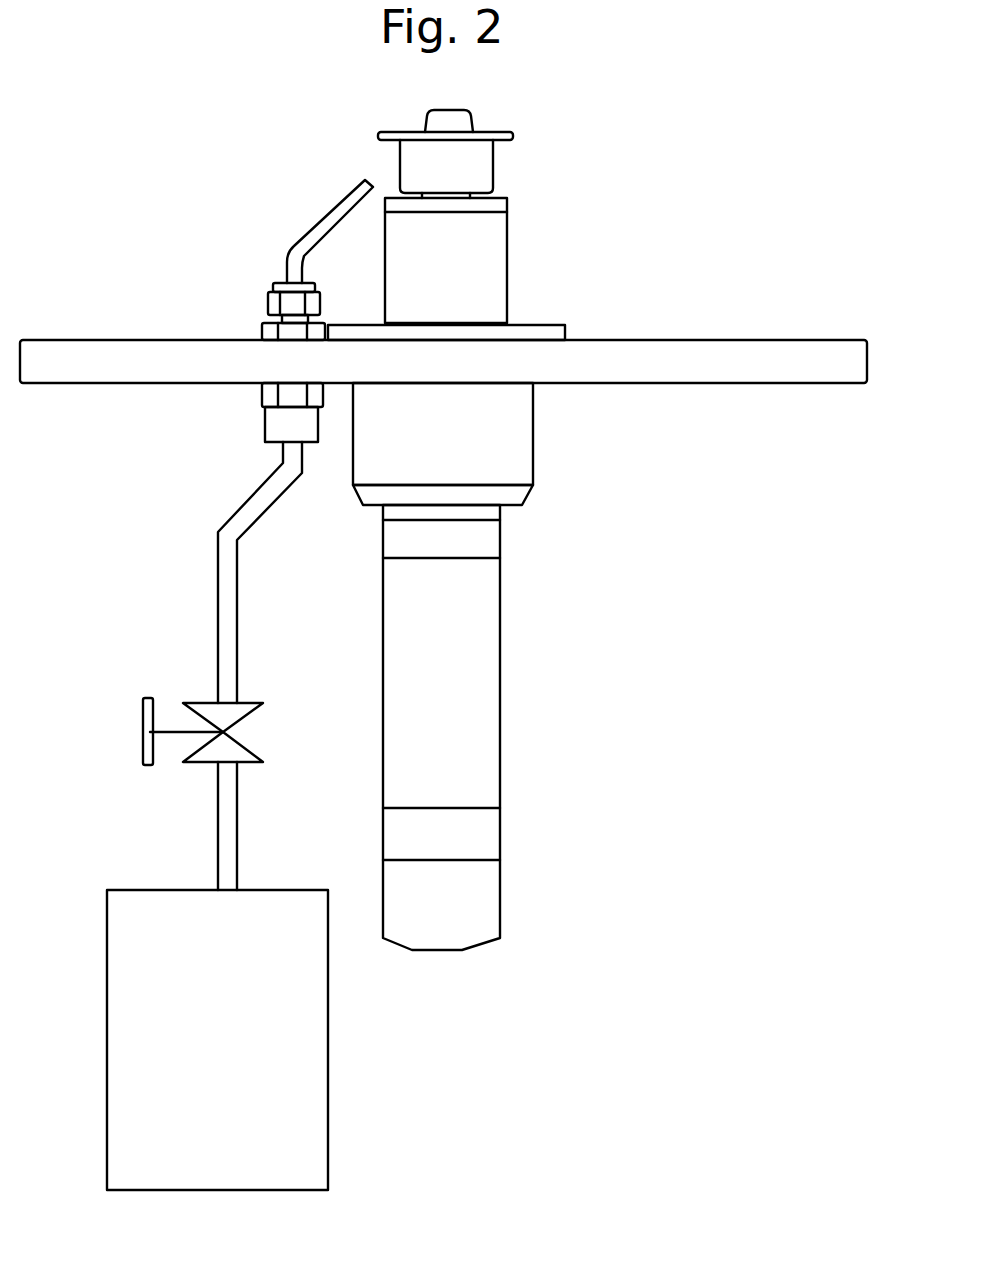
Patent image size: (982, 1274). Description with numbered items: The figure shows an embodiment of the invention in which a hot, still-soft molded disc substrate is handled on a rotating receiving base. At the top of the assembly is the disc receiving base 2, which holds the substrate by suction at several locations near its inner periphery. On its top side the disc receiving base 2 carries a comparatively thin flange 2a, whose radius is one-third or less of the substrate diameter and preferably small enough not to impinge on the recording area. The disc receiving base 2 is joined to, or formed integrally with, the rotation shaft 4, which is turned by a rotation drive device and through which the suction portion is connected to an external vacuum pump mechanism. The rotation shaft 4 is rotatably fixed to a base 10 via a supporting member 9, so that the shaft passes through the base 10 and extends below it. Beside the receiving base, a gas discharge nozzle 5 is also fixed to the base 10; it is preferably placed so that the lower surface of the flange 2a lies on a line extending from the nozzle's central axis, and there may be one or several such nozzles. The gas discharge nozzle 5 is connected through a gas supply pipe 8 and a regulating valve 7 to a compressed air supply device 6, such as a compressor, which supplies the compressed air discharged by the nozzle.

The disc receiving base 2 is at (473, 167).
The flange 2a is at (513, 137).
The rotation shaft 4 is at (490, 277).
The gas discharge nozzle 5 is at (323, 227).
The compressed air supply device 6 is at (305, 1097).
The regulating valve 7 is at (240, 712).
The gas supply pipe 8 is at (225, 583).
The supporting member 9 is at (522, 428).
The base 10 is at (763, 347).